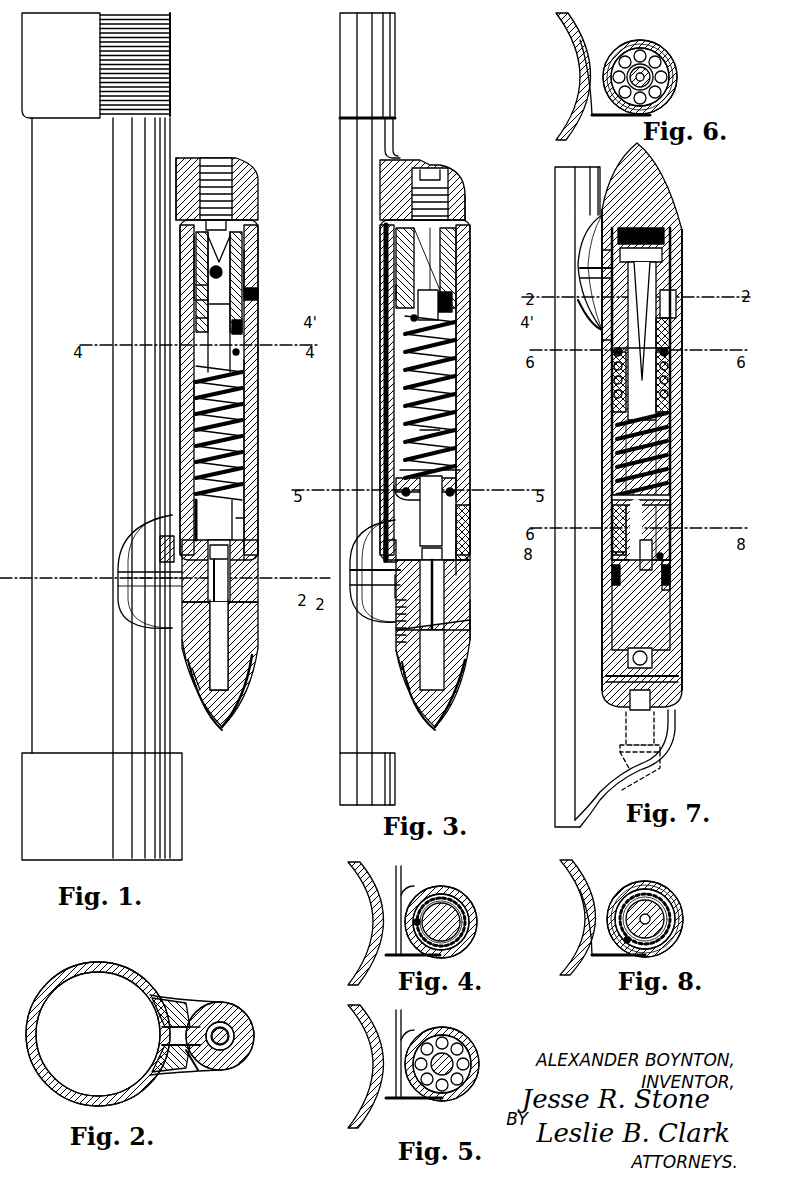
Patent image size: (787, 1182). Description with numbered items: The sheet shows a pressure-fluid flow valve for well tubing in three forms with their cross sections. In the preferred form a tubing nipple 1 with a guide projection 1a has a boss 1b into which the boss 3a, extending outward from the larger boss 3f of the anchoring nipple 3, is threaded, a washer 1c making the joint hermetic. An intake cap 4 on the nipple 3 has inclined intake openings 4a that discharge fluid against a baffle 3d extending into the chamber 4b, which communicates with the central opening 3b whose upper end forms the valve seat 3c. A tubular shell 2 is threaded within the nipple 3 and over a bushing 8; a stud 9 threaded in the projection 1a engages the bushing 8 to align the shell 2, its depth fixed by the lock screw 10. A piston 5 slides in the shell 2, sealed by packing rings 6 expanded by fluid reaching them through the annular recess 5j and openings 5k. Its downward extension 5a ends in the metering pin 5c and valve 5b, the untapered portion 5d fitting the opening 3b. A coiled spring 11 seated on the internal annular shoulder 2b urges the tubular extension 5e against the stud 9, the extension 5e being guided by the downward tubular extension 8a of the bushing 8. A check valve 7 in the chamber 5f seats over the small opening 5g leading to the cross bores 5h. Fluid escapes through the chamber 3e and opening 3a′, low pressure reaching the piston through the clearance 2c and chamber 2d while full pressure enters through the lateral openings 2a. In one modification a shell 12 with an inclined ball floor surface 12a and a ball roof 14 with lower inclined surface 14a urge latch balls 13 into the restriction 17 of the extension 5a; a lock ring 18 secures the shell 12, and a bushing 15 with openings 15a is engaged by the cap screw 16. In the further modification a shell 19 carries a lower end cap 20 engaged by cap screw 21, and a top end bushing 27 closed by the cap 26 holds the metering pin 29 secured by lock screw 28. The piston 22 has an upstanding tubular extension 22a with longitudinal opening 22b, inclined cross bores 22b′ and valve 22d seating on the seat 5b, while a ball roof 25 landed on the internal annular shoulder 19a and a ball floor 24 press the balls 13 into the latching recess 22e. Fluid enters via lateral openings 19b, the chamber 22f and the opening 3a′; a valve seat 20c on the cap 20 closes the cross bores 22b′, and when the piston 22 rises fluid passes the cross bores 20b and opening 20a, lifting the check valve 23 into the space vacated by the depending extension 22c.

In FIG. 1, the tubing nipple 1 is at (102, 436).
In FIG. 2, the tubing nipple 1 is at (140, 975).
In FIG. 3, the tubing nipple 1 is at (380, 60).
In FIG. 4, the tubing nipple 1 is at (372, 873).
In FIG. 5, the tubing nipple 1 is at (372, 1022).
In FIG. 6, the tubing nipple 1 is at (566, 28).
In FIG. 7, the tubing nipple 1 is at (565, 193).
In FIG. 8, the tubing nipple 1 is at (586, 882).
In FIG. 1, the guide projection 1a is at (255, 200).
In FIG. 3, the guide projection 1a is at (465, 210).
In FIG. 6, the guide projection 1a is at (602, 42).
In FIG. 7, the guide projection 1a is at (676, 730).
In FIG. 8, the guide projection 1a is at (608, 882).
In FIG. 1, the boss 1b is at (160, 540).
In FIG. 3, the boss 1b is at (385, 545).
In FIG. 4, the boss 1b is at (398, 950).
In FIG. 7, the boss 1b is at (596, 322).
In FIG. 1, the washer 1c is at (172, 530).
In FIG. 2, the washer 1c is at (185, 1000).
In FIG. 3, the washer 1c is at (395, 545).
In FIG. 4, the washer 1c is at (402, 900).
In FIG. 5, the washer 1c is at (407, 1040).
In FIG. 7, the washer 1c is at (600, 245).
In FIG. 1, the tubular shell 2 is at (258, 385).
In FIG. 4, the tubular shell 2 is at (478, 917).
In FIG. 1, the lateral openings 2a is at (255, 293).
In FIG. 1, the internal annular shoulder 2b is at (255, 512).
In FIG. 1, the clearance 2c is at (200, 518).
In FIG. 3, the clearance 2c is at (470, 510).
In FIG. 1, the chamber 2d is at (255, 405).
In FIG. 3, the chamber 2d is at (470, 382).
In FIG. 1, the anchoring nipple 3 is at (258, 535).
In FIG. 2, the anchoring nipple 3 is at (245, 1005).
In FIG. 3, the anchoring nipple 3 is at (470, 580).
In FIG. 1, the boss 3a is at (170, 592).
In FIG. 2, the boss 3a is at (182, 1042).
In FIG. 3, the boss 3a is at (392, 565).
In FIG. 7, the boss 3a is at (600, 262).
In FIG. 1, the opening 3a′ is at (160, 574).
In FIG. 2, the opening 3a′ is at (182, 1028).
In FIG. 3, the opening 3a′ is at (402, 586).
In FIG. 7, the opening 3a′ is at (600, 278).
In FIG. 1, the central opening 3b is at (228, 638).
In FIG. 3, the central opening 3b is at (440, 652).
In FIG. 1, the valve seat 3c is at (252, 610).
In FIG. 2, the valve seat 3c is at (228, 1023).
In FIG. 3, the valve seat 3c is at (466, 613).
In FIG. 1, the baffle 3d is at (188, 675).
In FIG. 3, the baffle 3d is at (402, 672).
In FIG. 1, the chamber 3e is at (258, 545).
In FIG. 3, the chamber 3e is at (460, 565).
In FIG. 2, the larger boss 3f is at (195, 1070).
In FIG. 3, the larger boss 3f is at (396, 635).
In FIG. 4, the larger boss 3f is at (410, 880).
In FIG. 5, the larger boss 3f is at (420, 1030).
In FIG. 1, the intake cap 4 is at (232, 718).
In FIG. 3, the intake cap 4 is at (445, 718).
In FIG. 1, the inclined intake openings 4a is at (250, 682).
In FIG. 3, the inclined intake openings 4a is at (455, 685).
In FIG. 1, the chamber 4b is at (196, 700).
In FIG. 3, the chamber 4b is at (408, 695).
In FIG. 1, the piston 5 is at (212, 330).
In FIG. 3, the piston 5 is at (470, 325).
In FIG. 4, the piston 5 is at (468, 897).
In FIG. 1, the downward extension 5a is at (190, 385).
In FIG. 3, the downward extension 5a is at (402, 375).
In FIG. 5, the downward extension 5a is at (420, 1063).
In FIG. 1, the valve 5b is at (244, 558).
In FIG. 3, the valve 5b is at (455, 552).
In FIG. 7, the valve 5b is at (652, 262).
In FIG. 1, the metering pin 5c is at (222, 592).
In FIG. 2, the metering pin 5c is at (226, 1040).
In FIG. 3, the metering pin 5c is at (452, 597).
In FIG. 1, the upper untapered portion 5d is at (258, 568).
In FIG. 1, the tubular extension 5e is at (222, 262).
In FIG. 1, the chamber 5f is at (214, 258).
In FIG. 1, the small opening 5g is at (200, 293).
In FIG. 1, the cross bores 5h is at (232, 306).
In FIG. 1, the annular recess 5j is at (200, 318).
In FIG. 3, the annular recess 5j is at (402, 290).
In FIG. 4, the annular recess 5j is at (468, 950).
In FIG. 7, the annular recess 5j is at (610, 558).
In FIG. 8, the annular recess 5j is at (628, 945).
In FIG. 1, the openings 5k is at (240, 352).
In FIG. 3, the openings 5k is at (412, 318).
In FIG. 4, the openings 5k is at (414, 920).
In FIG. 7, the openings 5k is at (666, 552).
In FIG. 8, the openings 5k is at (660, 887).
In FIG. 1, the packing rings 6 is at (250, 330).
In FIG. 3, the packing rings 6 is at (470, 297).
In FIG. 4, the packing rings 6 is at (478, 937).
In FIG. 7, the packing rings 6 is at (614, 535).
In FIG. 8, the packing rings 6 is at (680, 893).
In FIG. 1, the check valve 7 is at (258, 270).
In FIG. 1, the bushing 8 is at (258, 235).
In FIG. 1, the downward tubular extension 8a is at (258, 282).
In FIG. 1, the stud 9 is at (232, 222).
In FIG. 1, the lock screw 10 is at (185, 185).
In FIG. 1, the coiled spring 11 is at (246, 432).
In FIG. 3, the coiled spring 11 is at (470, 410).
In FIG. 7, the coiled spring 11 is at (612, 465).
In FIG. 3, the shell 12 is at (470, 428).
In FIG. 5, the shell 12 is at (460, 1036).
In FIG. 3, the inclined ball floor surface 12a is at (402, 497).
In FIG. 5, the inclined ball floor surface 12a is at (438, 1100).
In FIG. 3, the latch balls 13 is at (470, 497).
In FIG. 5, the latch balls 13 is at (470, 1048).
In FIG. 6, the latch balls 13 is at (685, 58).
In FIG. 7, the latch balls 13 is at (616, 355).
In FIG. 3, the ball roof 14 is at (470, 470).
In FIG. 3, the lower inclined surface 14a is at (410, 478).
In FIG. 3, the bushing 15 is at (468, 258).
In FIG. 3, the openings 15a is at (455, 237).
In FIG. 3, the cap screw 16 is at (460, 187).
In FIG. 3, the restriction 17 is at (420, 432).
In FIG. 3, the lock ring 18 is at (470, 520).
In FIG. 6, the shell 19 is at (686, 78).
In FIG. 7, the shell 19 is at (680, 425).
In FIG. 8, the shell 19 is at (690, 917).
In FIG. 7, the internal annular shoulder 19a is at (672, 308).
In FIG. 7, the lateral openings 19b is at (672, 580).
In FIG. 7, the lower end cap 20 is at (666, 643).
In FIG. 7, the opening 20a is at (666, 673).
In FIG. 7, the cross bores 20b is at (662, 682).
In FIG. 7, the valve seat 20c is at (610, 580).
In FIG. 7, the cap screw 21 is at (652, 700).
In FIG. 7, the piston 22 is at (672, 563).
In FIG. 8, the piston 22 is at (622, 905).
In FIG. 6, the upstanding tubular extension 22a is at (626, 80).
In FIG. 7, the upstanding tubular extension 22a is at (670, 462).
In FIG. 6, the longitudinal opening 22b is at (680, 93).
In FIG. 7, the longitudinal opening 22b is at (616, 385).
In FIG. 8, the longitudinal opening 22b is at (684, 946).
In FIG. 7, the inclined cross bores 22b′ is at (668, 595).
In FIG. 7, the depending extension 22c is at (652, 622).
In FIG. 7, the valve 22d is at (668, 320).
In FIG. 7, the latching recess 22e is at (666, 388).
In FIG. 7, the chamber 22f is at (662, 295).
In FIG. 7, the check valve 23 is at (632, 660).
In FIG. 6, the ball floor 24 is at (660, 46).
In FIG. 7, the ball floor 24 is at (660, 358).
In FIG. 7, the ball roof 25 is at (680, 337).
In FIG. 7, the cap 26 is at (655, 160).
In FIG. 7, the top end bushing 27 is at (682, 200).
In FIG. 7, the lock screw 28 is at (676, 233).
In FIG. 7, the metering pin 29 is at (648, 277).